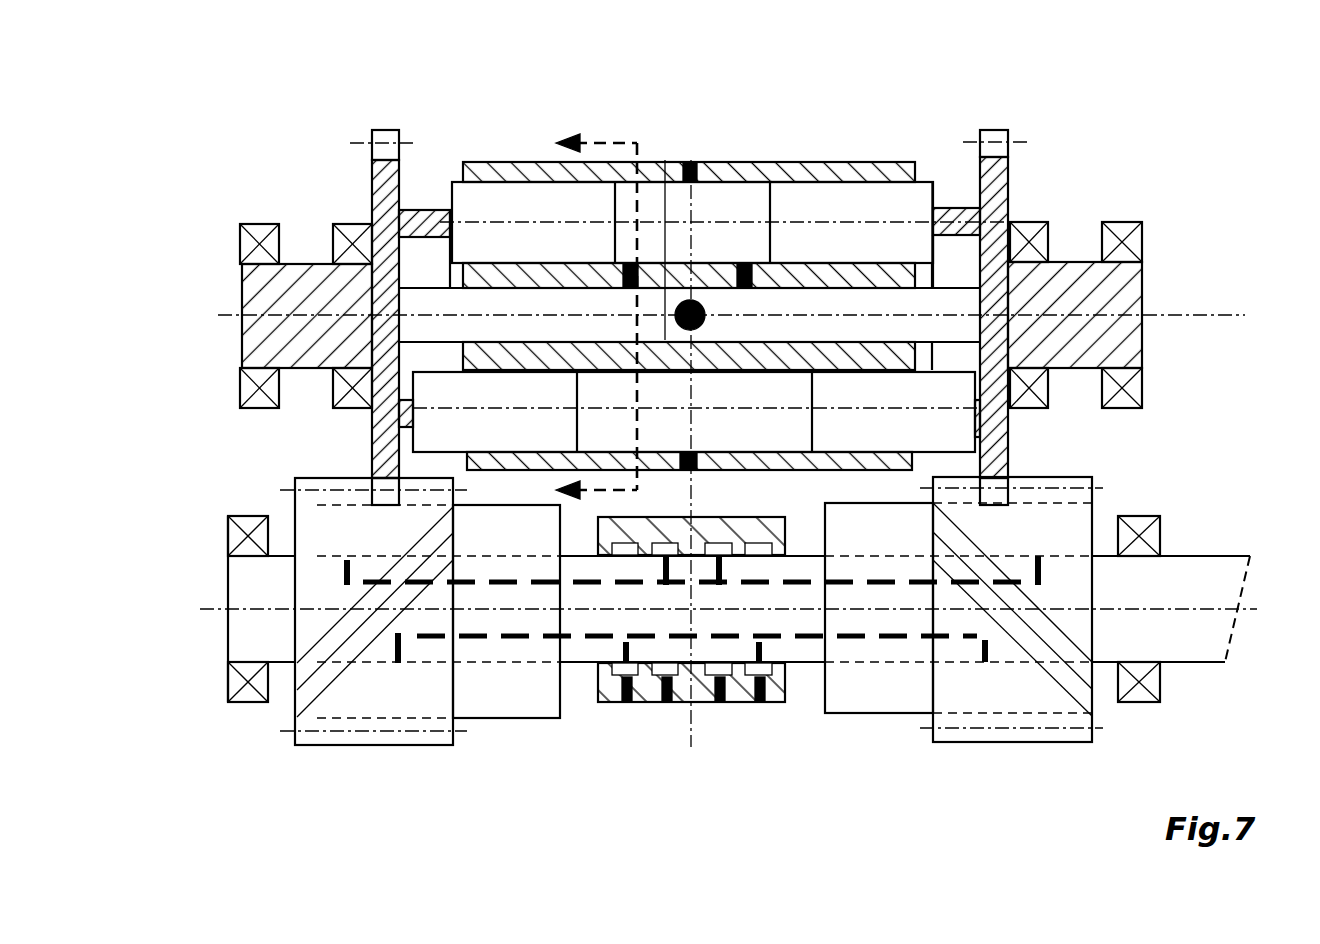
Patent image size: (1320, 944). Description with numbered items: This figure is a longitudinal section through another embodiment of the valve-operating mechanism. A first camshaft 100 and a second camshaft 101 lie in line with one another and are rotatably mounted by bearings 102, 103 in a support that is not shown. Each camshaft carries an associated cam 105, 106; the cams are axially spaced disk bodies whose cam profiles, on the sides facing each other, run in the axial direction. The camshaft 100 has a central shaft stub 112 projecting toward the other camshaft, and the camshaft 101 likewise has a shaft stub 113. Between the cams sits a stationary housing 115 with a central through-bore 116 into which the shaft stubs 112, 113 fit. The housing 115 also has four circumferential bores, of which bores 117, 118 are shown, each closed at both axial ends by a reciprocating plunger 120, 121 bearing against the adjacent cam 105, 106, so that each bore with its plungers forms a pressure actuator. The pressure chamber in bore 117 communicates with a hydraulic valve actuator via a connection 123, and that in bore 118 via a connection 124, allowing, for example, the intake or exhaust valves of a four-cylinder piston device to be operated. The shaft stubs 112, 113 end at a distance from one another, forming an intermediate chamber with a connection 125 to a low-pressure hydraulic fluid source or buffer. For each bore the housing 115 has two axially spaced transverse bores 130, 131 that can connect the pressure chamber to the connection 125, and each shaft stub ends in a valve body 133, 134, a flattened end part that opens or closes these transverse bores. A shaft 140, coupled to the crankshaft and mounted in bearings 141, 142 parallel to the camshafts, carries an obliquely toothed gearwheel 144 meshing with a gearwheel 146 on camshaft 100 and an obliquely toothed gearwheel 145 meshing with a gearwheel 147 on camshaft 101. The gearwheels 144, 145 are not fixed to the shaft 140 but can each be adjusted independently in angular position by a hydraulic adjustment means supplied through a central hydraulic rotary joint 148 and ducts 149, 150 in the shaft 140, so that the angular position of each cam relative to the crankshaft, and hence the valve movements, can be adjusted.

The first camshaft 100 is at (245, 338).
The second camshaft 101 is at (1097, 333).
The bearings 102 is at (352, 235).
The bearings 103 is at (1118, 222).
The cam 105 is at (400, 230).
The cam 106 is at (960, 230).
The shaft stub 112 is at (500, 247).
The shaft stub 113 is at (867, 305).
The housing 115 is at (912, 164).
The central through-bore 116 is at (752, 275).
The bore 117 is at (698, 250).
The bore 118 is at (665, 200).
The plunger 120 is at (530, 427).
The plunger 121 is at (850, 417).
The connection 123 is at (690, 300).
The connection 124 is at (688, 472).
The connection 125 is at (720, 263).
The transverse bore 130 is at (637, 143).
The transverse bore 131 is at (800, 287).
The valve body 133 is at (630, 337).
The valve body 134 is at (772, 363).
The shaft 140 is at (1207, 603).
The bearing 141 is at (1137, 687).
The bearing 142 is at (230, 697).
The gearwheel 144 is at (343, 704).
The gearwheel 145 is at (972, 683).
The gearwheel 146 is at (372, 445).
The gearwheel 147 is at (1008, 455).
The central hydraulic rotary joint 148 is at (648, 687).
The duct 149 is at (788, 585).
The duct 150 is at (560, 637).